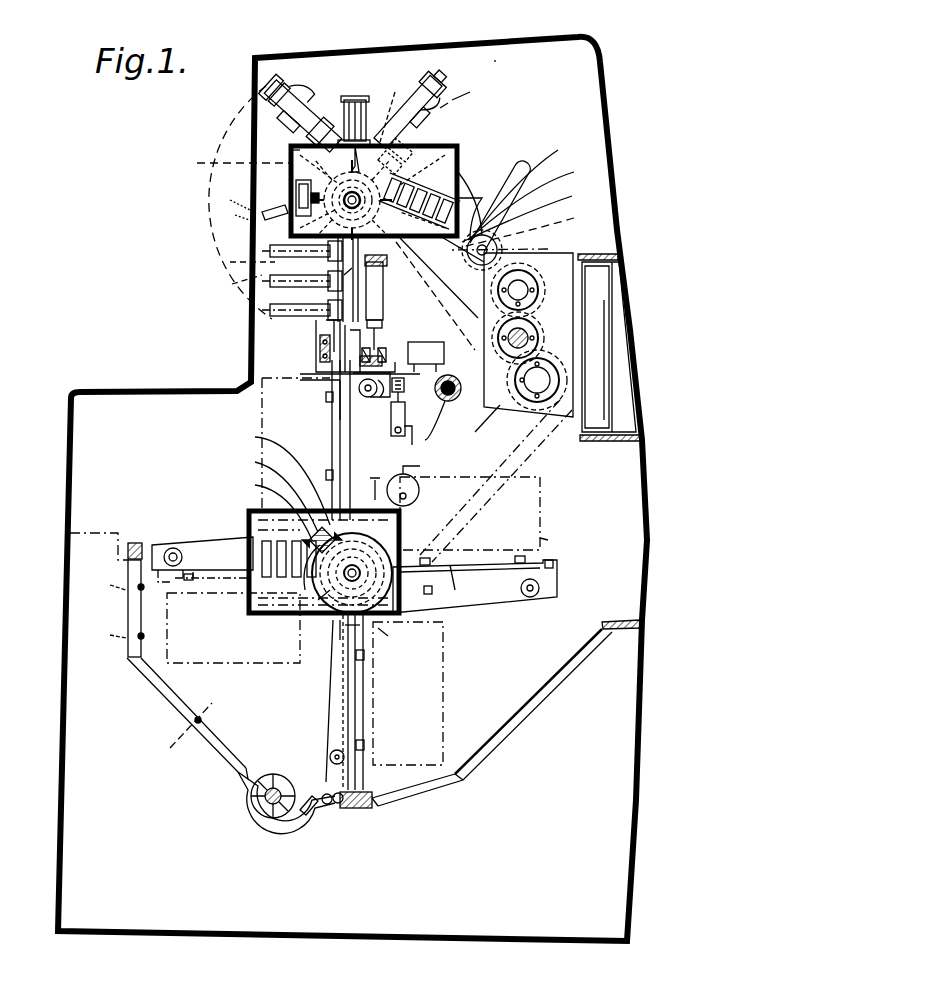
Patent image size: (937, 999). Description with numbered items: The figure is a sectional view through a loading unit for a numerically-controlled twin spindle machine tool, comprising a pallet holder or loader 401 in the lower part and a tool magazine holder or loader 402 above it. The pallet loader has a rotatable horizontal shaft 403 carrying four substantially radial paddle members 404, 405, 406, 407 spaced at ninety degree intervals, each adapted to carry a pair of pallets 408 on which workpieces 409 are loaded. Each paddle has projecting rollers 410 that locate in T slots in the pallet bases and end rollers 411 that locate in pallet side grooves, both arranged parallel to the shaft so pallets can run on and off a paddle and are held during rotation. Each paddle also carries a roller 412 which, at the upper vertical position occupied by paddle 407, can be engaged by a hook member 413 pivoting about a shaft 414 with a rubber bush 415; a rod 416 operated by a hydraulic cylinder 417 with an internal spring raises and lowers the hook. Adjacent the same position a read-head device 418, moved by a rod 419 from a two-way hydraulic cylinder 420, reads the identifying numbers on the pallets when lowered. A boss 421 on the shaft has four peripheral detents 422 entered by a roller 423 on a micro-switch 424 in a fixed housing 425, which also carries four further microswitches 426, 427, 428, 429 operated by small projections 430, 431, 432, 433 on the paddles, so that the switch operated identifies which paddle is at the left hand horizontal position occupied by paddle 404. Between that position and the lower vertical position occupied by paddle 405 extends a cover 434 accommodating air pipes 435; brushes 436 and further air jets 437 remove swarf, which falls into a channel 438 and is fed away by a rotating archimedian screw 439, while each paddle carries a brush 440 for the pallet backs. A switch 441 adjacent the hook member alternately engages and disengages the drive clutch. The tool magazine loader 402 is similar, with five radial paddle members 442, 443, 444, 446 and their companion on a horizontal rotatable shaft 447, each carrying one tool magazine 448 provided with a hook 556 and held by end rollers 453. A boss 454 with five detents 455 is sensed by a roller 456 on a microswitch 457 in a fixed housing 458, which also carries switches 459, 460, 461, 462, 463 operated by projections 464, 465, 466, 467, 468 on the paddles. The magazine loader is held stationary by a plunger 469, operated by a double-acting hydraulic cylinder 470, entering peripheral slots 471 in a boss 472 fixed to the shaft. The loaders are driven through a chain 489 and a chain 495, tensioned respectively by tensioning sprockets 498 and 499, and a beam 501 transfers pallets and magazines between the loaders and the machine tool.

The pallet holder or loader 401 is at (457, 648).
The tool magazine holder or loader 402 is at (505, 140).
The rotatable horizontal shaft 403 is at (380, 630).
The paddle member 404 is at (200, 545).
The paddle member 405 is at (345, 722).
The paddle member 406 is at (520, 600).
The paddle member 407 is at (420, 488).
The pallets 408 is at (544, 538).
The workpieces 409 is at (540, 504).
The projecting rollers 410 is at (455, 600).
The projecting end rollers 411 is at (460, 500).
The roller 412 is at (392, 396).
The hook member 413 is at (382, 402).
The shaft 414 is at (404, 412).
The rubber bush 415 is at (453, 407).
The rod 416 is at (372, 400).
The hydraulic cylinder 417 is at (412, 445).
The read-head device 418 is at (318, 368).
The rod 419 is at (352, 378).
The two-way hydraulic cylinder 420 is at (384, 300).
The boss 421 is at (356, 640).
The peripheral detents 422 is at (340, 640).
The roller 423 is at (322, 560).
The micro-switch 424 is at (300, 614).
The fixed housing 425 is at (300, 510).
The microswitch 426 is at (271, 473).
The microswitch 427 is at (265, 488).
The microswitch 428 is at (262, 503).
The microswitch 429 is at (282, 540).
The small projection 430 is at (330, 596).
The small projection 431 is at (343, 664).
The small projection 432 is at (432, 596).
The small projection 433 is at (418, 500).
The cover 434 is at (143, 625).
The air pipes 435 is at (140, 590).
The brushes 436 is at (138, 520).
The air jets 437 is at (352, 810).
The channel 438 is at (320, 814).
The rotating archimedian screw 439 is at (290, 765).
The brush 440 is at (348, 716).
The switch 441 is at (444, 348).
The paddle member 442 is at (424, 96).
The paddle member 443 is at (285, 110).
The paddle member 444 is at (235, 244).
The paddle member 446 is at (528, 223).
The horizontal rotatable shaft 447 is at (374, 191).
The tool magazine 448 is at (435, 130).
The end rollers 453 is at (455, 100).
The boss 454 is at (230, 262).
The detents 455 is at (338, 238).
The roller 456 is at (300, 214).
The microswitch 457 is at (296, 190).
The fixed housing 458 is at (292, 152).
The switch 459 is at (474, 190).
The switch 460 is at (473, 205).
The switch 461 is at (500, 212).
The switch 462 is at (532, 181).
The switch 463 is at (536, 193).
The projection 464 is at (399, 106).
The projection 465 is at (220, 162).
The projection 466 is at (232, 284).
The projection 467 is at (352, 290).
The projection 468 is at (532, 208).
The plunger 469 is at (334, 146).
The double-acting hydraulic cylinder 470 is at (368, 98).
The peripheral slots 471 is at (372, 252).
The boss 472 is at (418, 270).
The chain 489 is at (535, 432).
The chain 495 is at (440, 318).
The tensioning sprocket 498 is at (472, 482).
The tensioning sprocket 499 is at (520, 237).
The beam 501 is at (322, 352).
The hook 556 is at (443, 110).